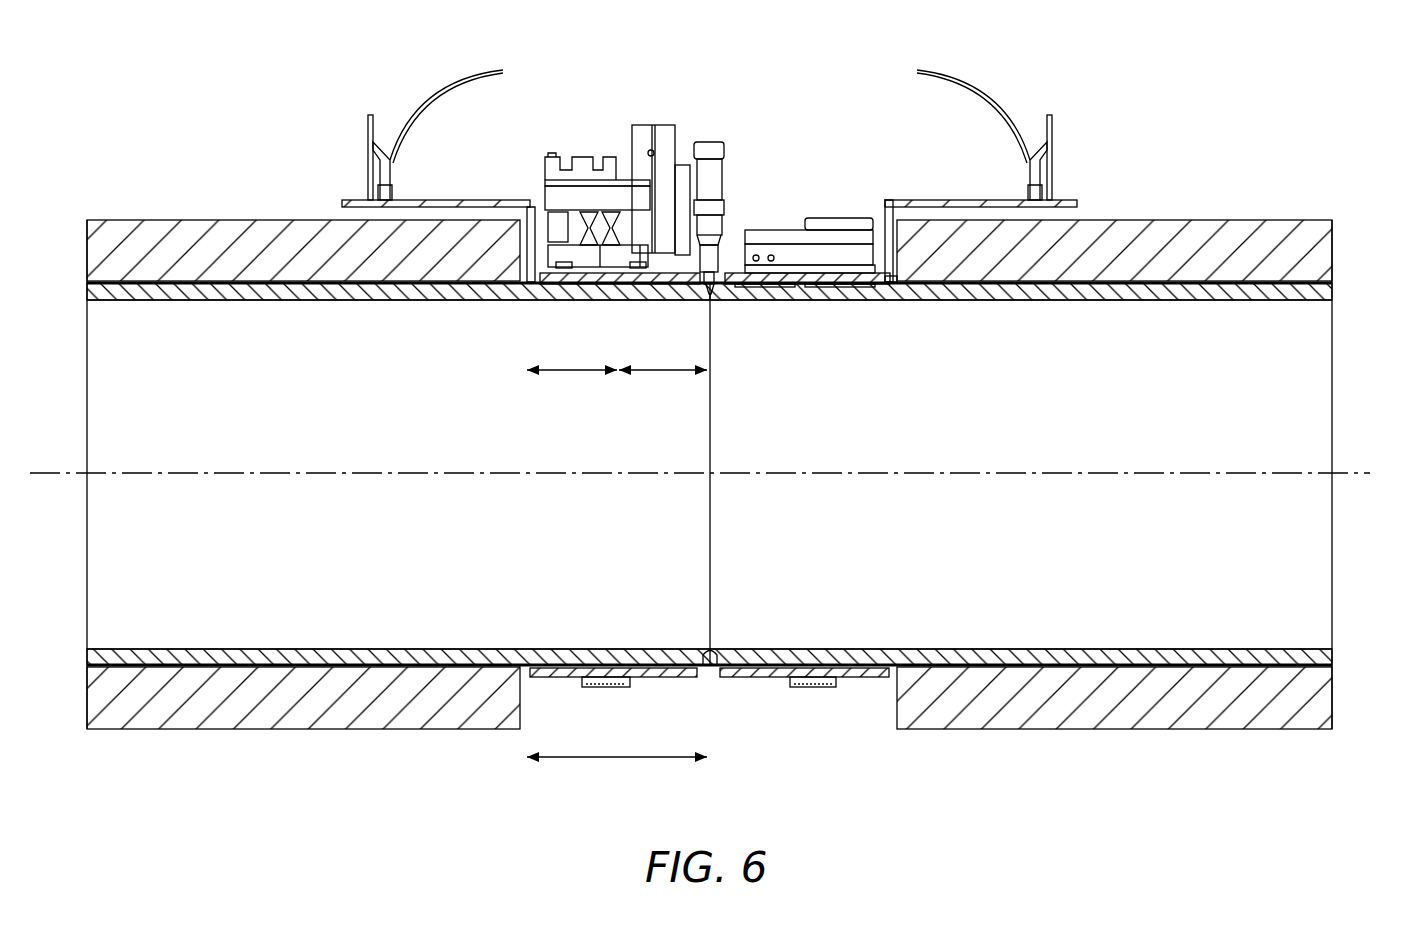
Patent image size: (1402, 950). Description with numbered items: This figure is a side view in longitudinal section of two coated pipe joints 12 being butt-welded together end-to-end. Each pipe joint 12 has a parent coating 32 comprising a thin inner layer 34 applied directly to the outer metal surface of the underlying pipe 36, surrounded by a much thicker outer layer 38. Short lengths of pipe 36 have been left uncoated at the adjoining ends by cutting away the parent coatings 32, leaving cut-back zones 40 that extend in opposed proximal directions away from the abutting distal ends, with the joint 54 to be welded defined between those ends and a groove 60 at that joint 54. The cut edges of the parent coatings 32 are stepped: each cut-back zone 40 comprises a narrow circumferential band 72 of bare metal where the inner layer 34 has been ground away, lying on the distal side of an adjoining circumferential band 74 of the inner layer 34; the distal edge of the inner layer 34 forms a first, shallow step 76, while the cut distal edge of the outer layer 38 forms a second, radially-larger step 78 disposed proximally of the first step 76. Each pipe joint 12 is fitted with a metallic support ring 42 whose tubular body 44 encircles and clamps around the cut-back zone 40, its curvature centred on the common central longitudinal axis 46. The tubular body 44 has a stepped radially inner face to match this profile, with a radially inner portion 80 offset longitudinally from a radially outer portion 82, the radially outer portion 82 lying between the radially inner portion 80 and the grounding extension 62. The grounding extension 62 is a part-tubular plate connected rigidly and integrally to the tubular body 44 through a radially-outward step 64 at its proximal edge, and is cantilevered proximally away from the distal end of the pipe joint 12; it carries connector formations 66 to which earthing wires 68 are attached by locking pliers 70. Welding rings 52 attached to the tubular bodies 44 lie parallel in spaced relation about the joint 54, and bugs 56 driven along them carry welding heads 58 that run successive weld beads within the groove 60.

The pipe joint 12 is at (210, 190).
The parent coating 32 is at (181, 758).
The inner layer 34 is at (242, 292).
The pipe 36 is at (354, 292).
The outer layer 38 is at (130, 232).
The cut-back zone 40 is at (618, 762).
The support ring 42 is at (518, 155).
The tubular body 44 is at (663, 679).
The central longitudinal axis 46 is at (1030, 478).
The welding ring 52 is at (606, 670).
The joint 54 is at (706, 519).
The bug 56 is at (596, 158).
The welding head 58 is at (708, 142).
The groove 60 is at (705, 652).
The grounding extension 62 is at (468, 199).
The step 64 is at (890, 210).
The connector formation 66 is at (376, 190).
The earthing wire 68 is at (438, 86).
The locking pliers 70 is at (368, 128).
The circumferential band of bare metal 72 is at (662, 375).
The circumferential band of the inner layer 74 is at (573, 375).
The first step 76 is at (812, 290).
The second step 78 is at (915, 285).
The radially inner portion 80 is at (752, 290).
The radially outer portion 82 is at (863, 290).